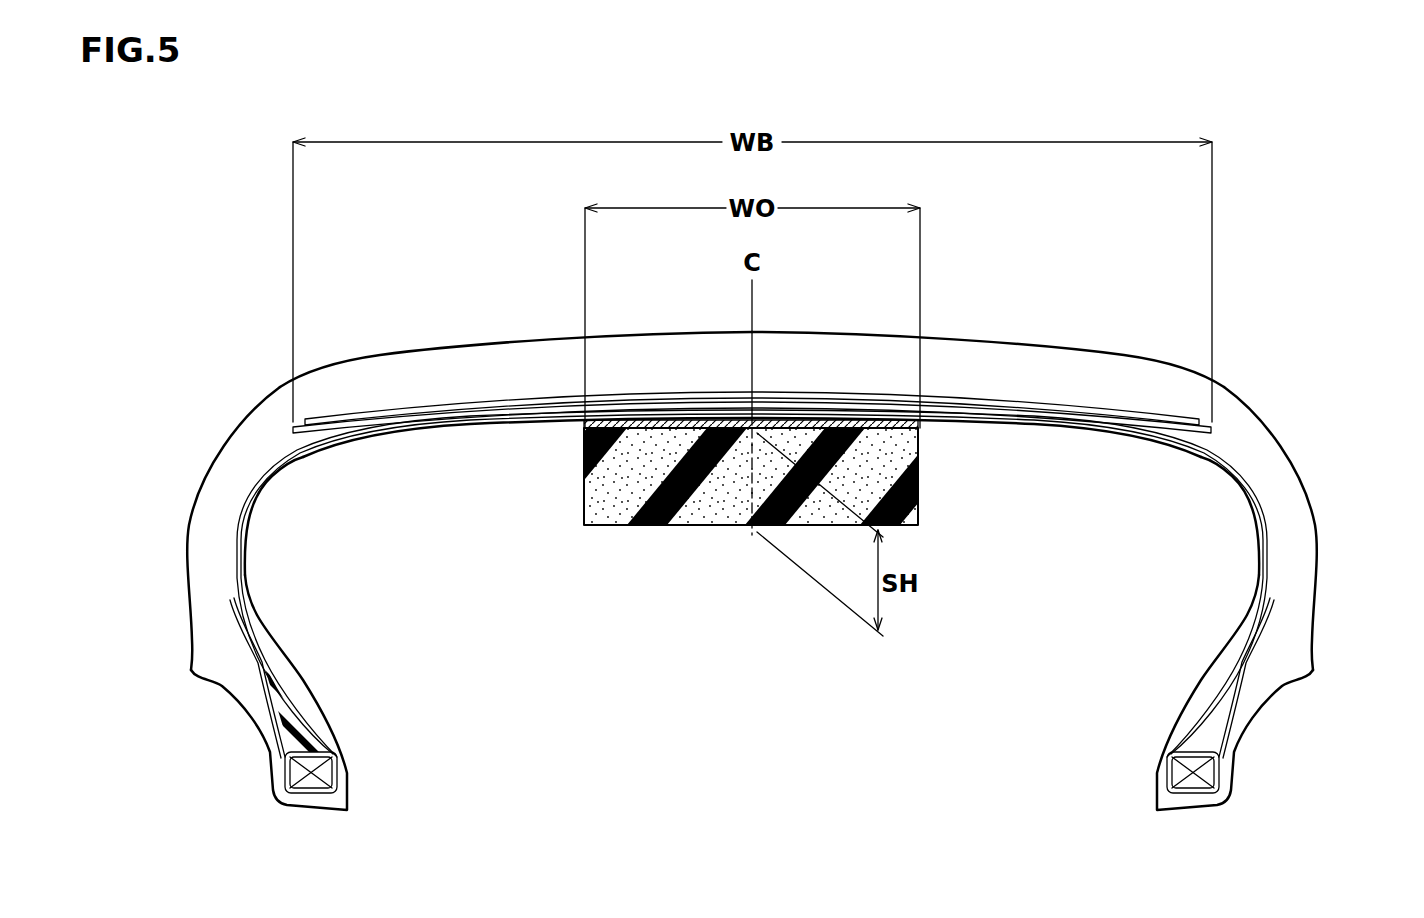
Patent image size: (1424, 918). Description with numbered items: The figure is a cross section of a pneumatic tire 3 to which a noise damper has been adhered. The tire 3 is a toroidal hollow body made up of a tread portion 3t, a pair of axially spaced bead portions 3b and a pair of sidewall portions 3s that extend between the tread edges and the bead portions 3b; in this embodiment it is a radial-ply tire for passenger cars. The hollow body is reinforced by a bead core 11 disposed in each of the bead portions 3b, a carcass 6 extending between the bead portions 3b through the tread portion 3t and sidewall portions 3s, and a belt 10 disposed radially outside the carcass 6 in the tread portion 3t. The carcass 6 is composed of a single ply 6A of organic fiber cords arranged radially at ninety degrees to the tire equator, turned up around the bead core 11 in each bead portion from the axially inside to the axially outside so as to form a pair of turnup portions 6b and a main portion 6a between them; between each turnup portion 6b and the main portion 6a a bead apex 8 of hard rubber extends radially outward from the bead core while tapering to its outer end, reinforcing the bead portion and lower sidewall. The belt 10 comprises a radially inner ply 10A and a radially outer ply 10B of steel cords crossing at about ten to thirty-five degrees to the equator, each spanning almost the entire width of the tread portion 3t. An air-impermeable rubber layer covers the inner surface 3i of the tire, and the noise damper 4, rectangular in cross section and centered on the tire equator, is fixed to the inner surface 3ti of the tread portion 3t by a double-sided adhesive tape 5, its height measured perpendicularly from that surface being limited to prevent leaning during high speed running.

The pneumatic tire 3 is at (754, 532).
The tread portion 3t is at (1090, 342).
The sidewall portions 3s is at (177, 527).
The bead portions 3b is at (265, 763).
The inner surface of the tread portion 3ti is at (1080, 432).
The inner surface of the tire 3i is at (1248, 527).
The noise damper 4 is at (675, 528).
The double-sided adhesive tape 5 is at (652, 424).
The carcass 6 is at (819, 601).
The carcass ply 6A is at (819, 601).
The main portion 6a is at (1270, 581).
The turnup portions 6b is at (1237, 687).
The bead apex 8 is at (1210, 720).
The belt 10 is at (752, 497).
The radially inner ply 10A is at (387, 420).
The radially outer ply 10B is at (423, 403).
The bead core 11 is at (325, 775).